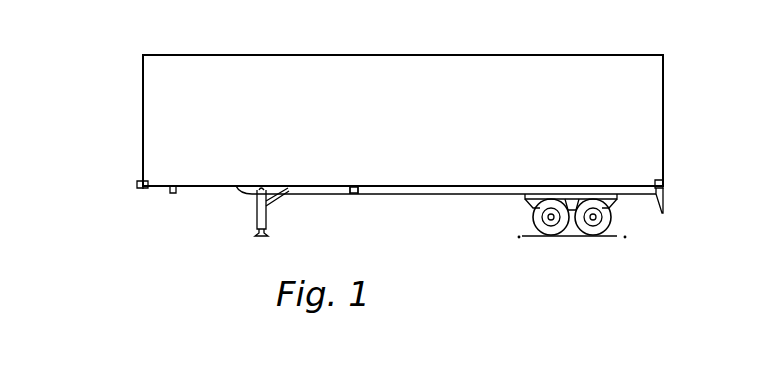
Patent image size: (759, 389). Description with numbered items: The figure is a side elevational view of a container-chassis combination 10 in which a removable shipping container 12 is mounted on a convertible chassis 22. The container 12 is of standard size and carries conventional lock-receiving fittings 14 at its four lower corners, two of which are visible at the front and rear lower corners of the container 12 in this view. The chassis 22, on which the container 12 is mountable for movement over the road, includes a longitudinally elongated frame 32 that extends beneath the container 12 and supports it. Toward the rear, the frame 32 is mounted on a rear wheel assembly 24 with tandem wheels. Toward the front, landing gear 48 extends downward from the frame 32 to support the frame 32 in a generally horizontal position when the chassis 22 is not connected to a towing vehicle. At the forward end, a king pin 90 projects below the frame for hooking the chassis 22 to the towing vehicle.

The container-chassis combination 10 is at (722, 100).
The shipping container 12 is at (533, 62).
The lock-receiving fittings 14 is at (140, 186).
The chassis 22 is at (455, 193).
The rear wheel assembly 24 is at (529, 237).
The frame 32 is at (383, 191).
The landing gear 48 is at (251, 211).
The king pin 90 is at (175, 194).